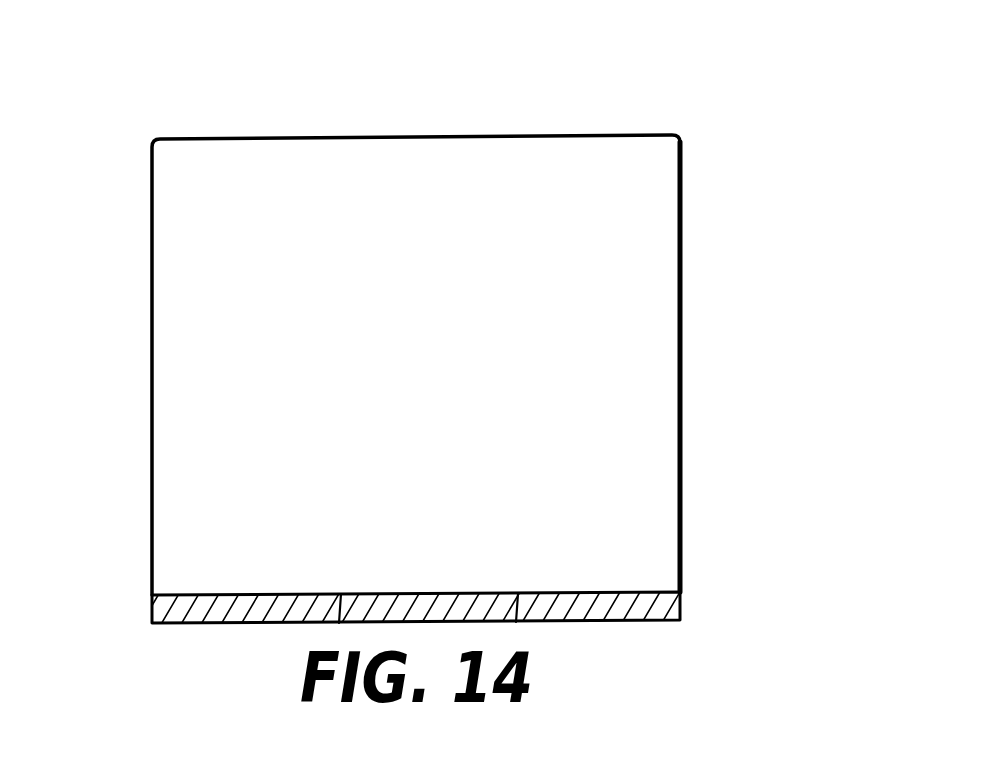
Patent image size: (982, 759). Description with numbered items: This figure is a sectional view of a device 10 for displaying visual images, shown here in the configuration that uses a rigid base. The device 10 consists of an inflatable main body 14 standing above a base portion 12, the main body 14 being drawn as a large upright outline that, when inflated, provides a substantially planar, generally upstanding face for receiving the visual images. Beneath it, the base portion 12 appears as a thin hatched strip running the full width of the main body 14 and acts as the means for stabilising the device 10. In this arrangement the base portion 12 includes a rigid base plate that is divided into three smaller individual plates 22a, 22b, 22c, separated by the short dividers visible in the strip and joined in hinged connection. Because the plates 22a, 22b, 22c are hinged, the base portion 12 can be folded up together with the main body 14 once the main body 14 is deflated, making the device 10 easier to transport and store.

The device 10 is at (770, 156).
The base portion 12 is at (695, 601).
The inflatable main body 14 is at (629, 303).
The individual plate 22a is at (227, 595).
The individual plate 22b is at (413, 594).
The individual plate 22c is at (608, 592).